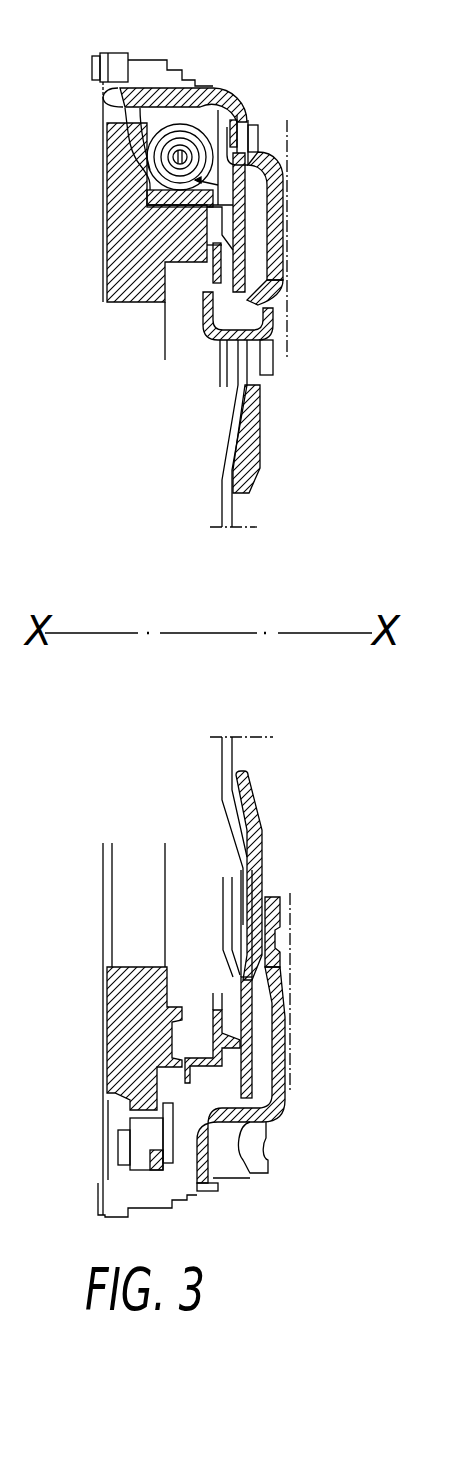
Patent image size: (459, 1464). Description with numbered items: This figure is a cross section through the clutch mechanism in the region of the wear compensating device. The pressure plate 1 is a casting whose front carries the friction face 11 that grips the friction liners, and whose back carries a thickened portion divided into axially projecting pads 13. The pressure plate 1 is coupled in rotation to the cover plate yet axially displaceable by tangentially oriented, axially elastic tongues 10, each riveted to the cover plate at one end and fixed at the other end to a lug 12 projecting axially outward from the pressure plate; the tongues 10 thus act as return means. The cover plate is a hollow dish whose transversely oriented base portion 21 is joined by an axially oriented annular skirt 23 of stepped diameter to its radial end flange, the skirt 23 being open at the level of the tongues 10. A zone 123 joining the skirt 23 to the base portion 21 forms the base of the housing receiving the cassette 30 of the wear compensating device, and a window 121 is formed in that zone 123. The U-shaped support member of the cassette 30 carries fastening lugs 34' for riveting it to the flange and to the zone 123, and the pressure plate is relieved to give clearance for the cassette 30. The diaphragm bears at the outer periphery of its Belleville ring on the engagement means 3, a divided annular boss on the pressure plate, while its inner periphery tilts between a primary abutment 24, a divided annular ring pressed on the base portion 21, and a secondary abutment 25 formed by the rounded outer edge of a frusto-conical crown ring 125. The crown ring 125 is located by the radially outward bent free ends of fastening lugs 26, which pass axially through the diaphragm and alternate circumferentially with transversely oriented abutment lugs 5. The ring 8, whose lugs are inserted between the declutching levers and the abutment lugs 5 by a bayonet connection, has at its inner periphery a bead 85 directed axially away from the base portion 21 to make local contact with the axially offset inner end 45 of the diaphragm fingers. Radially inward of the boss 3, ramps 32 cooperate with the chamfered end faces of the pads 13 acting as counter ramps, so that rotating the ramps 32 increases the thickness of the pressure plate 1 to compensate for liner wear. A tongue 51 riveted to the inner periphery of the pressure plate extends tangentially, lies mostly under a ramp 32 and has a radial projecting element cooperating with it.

The pressure plate 1 is at (92, 1098).
The engagement means 3 is at (237, 1040).
The abutment lugs 5 is at (265, 912).
The ring 8 is at (262, 792).
The tongues 10 is at (197, 1193).
The friction face 11 is at (103, 190).
The lug 12 is at (133, 1175).
The pads 13 is at (183, 1043).
The base portion 21 is at (280, 1085).
The annular skirt 23 is at (243, 1175).
The primary abutment 24 is at (277, 284).
The secondary abutment 25 is at (233, 977).
The fastening lugs 26 is at (277, 345).
The cassette 30 is at (125, 125).
The ramps 32 is at (207, 247).
The fastening lugs 34' is at (88, 41).
The inner end 45 is at (228, 497).
The tongue 51 is at (215, 278).
The bead 85 is at (246, 478).
The window 121 is at (257, 132).
The zone 123 is at (247, 104).
The frusto-conical crown ring 125 is at (220, 948).